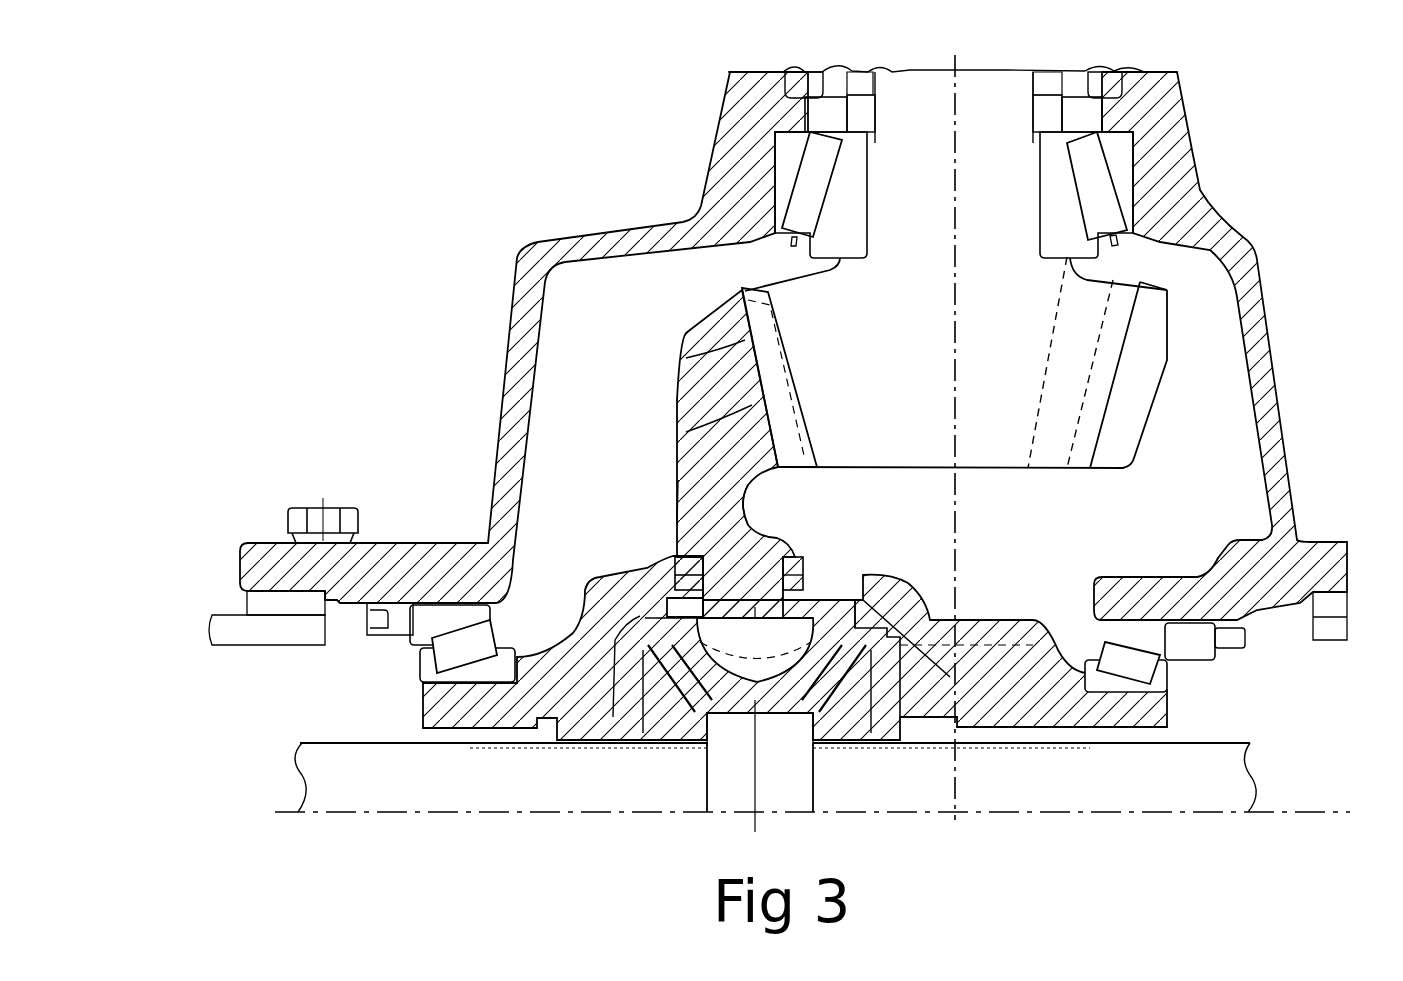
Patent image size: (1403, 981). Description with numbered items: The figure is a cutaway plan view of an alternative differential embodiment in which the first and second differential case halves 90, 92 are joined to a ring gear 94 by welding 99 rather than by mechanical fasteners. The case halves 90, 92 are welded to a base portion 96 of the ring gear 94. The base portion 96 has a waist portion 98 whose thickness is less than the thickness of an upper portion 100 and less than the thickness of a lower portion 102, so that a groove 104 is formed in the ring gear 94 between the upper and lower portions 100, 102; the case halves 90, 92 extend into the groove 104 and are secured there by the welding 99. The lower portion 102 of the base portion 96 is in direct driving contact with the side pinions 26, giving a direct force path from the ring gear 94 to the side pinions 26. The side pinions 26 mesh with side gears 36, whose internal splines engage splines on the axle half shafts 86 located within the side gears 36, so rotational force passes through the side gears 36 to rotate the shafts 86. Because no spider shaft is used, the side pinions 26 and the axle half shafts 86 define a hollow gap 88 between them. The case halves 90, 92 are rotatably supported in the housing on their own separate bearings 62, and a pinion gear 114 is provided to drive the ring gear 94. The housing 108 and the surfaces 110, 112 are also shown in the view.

The side pinion 26 is at (788, 716).
The side gear 36 is at (640, 732).
The bearing 62 is at (432, 660).
The axle half shaft 86 is at (325, 762).
The hollow gap 88 is at (778, 797).
The first differential case half 90 is at (592, 608).
The second differential case half 92 is at (918, 600).
The ring gear 94 is at (706, 330).
The base portion 96 is at (672, 503).
The waist portion 98 is at (793, 585).
The welding 99 is at (700, 536).
The upper portion 100 is at (752, 550).
The lower portion 102 is at (822, 614).
The groove 104 is at (700, 575).
The housing 108 is at (530, 240).
The first contact surface 110 is at (683, 360).
The second contact surface 112 is at (683, 433).
The pinion gear 114 is at (987, 470).